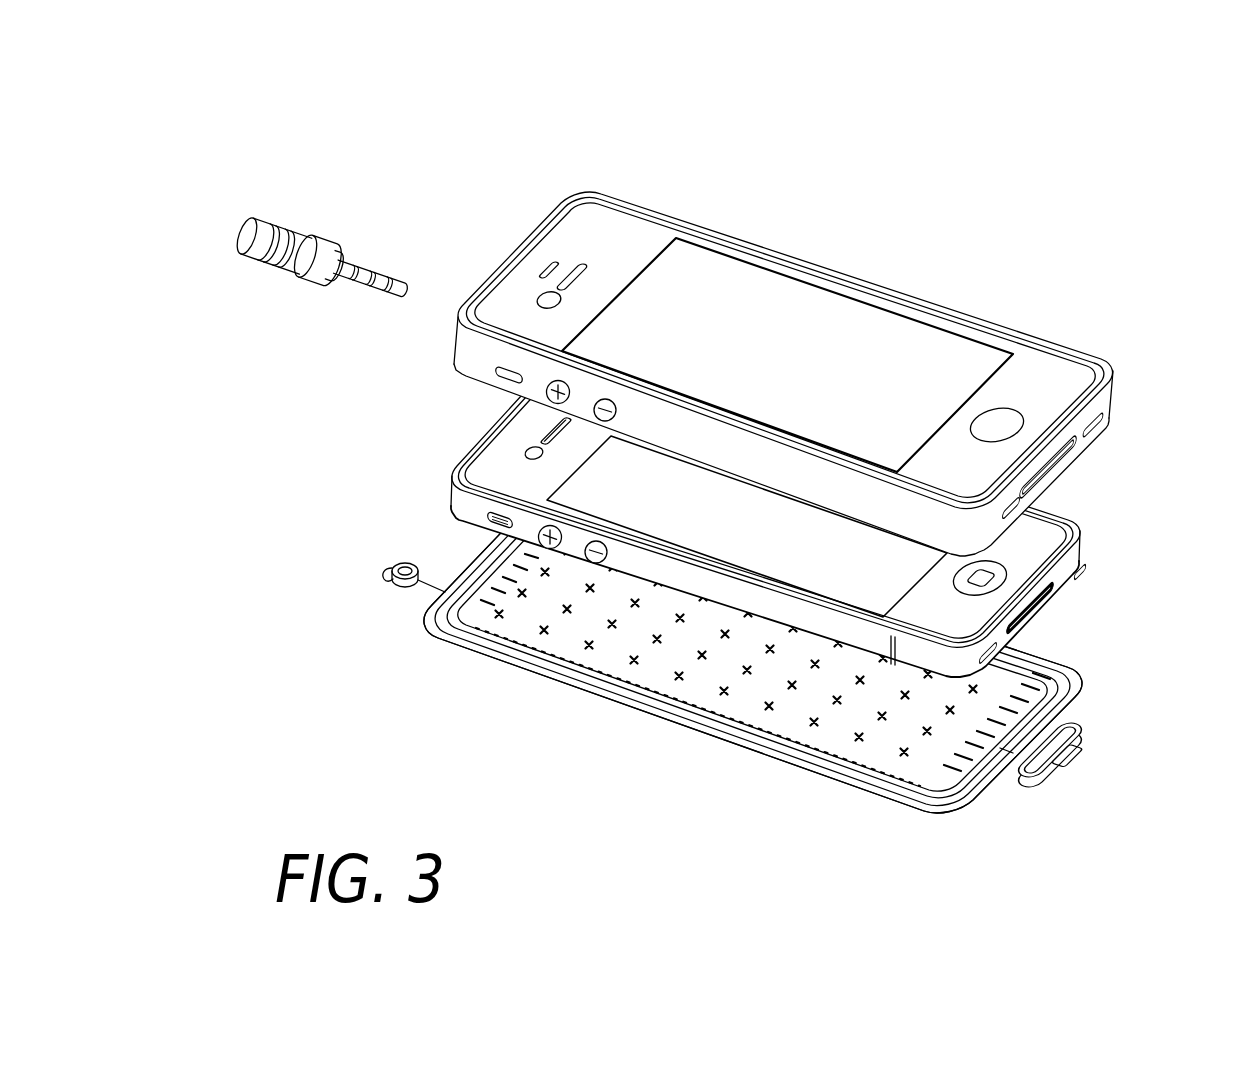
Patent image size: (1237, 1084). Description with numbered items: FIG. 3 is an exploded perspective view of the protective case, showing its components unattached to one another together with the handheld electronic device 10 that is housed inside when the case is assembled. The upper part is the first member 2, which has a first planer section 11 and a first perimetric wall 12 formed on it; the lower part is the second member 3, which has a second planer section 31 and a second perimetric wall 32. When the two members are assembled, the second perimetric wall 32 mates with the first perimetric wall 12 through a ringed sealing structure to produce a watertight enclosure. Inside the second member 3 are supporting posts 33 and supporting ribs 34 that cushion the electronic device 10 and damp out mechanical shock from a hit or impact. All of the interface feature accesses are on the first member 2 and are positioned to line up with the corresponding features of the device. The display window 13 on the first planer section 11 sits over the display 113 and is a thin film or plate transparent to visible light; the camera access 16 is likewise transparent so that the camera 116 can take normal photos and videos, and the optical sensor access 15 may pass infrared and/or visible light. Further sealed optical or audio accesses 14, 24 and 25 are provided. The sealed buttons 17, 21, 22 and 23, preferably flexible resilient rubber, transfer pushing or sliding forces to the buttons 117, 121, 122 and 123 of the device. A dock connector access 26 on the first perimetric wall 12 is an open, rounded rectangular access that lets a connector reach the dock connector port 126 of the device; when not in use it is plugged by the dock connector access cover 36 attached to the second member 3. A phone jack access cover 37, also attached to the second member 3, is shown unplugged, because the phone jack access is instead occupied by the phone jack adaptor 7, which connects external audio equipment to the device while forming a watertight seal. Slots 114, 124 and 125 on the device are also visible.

The first member 2 is at (798, 328).
The second member 3 is at (753, 704).
The phone jack adaptor 7 is at (262, 213).
The handheld electronic device 10 is at (688, 565).
The first planer section 11 is at (620, 232).
The first perimetric wall 12 is at (1106, 398).
The display window 13 is at (772, 320).
The sealed optical or audio access 14 is at (553, 262).
The optical sensor access 15 is at (571, 270).
The camera access 16 is at (545, 292).
The sealed button 17 is at (993, 423).
The sealed button 21 is at (490, 373).
The sealed button 22 is at (546, 391).
The sealed button 23 is at (594, 409).
The sealed optical or audio access 24 is at (1025, 506).
The sealed optical or audio access 25 is at (1110, 430).
The dock connector access 26 is at (1060, 464).
The second planer section 31 is at (792, 715).
The second perimetric wall 32 is at (821, 770).
The supporting posts 33 is at (902, 788).
The supporting ribs 34 is at (933, 803).
The dock connector access cover 36 is at (1047, 790).
The phone jack access cover 37 is at (396, 590).
The display 113 is at (757, 548).
The phone speaker slot 114 is at (542, 431).
The camera 116 is at (525, 455).
The button 117 is at (1013, 568).
The button 121 is at (487, 521).
The button 122 is at (547, 548).
The button 123 is at (593, 562).
The phone microphone 124 is at (998, 650).
The phone speaker 125 is at (1078, 578).
The dock connector port 126 is at (1046, 600).